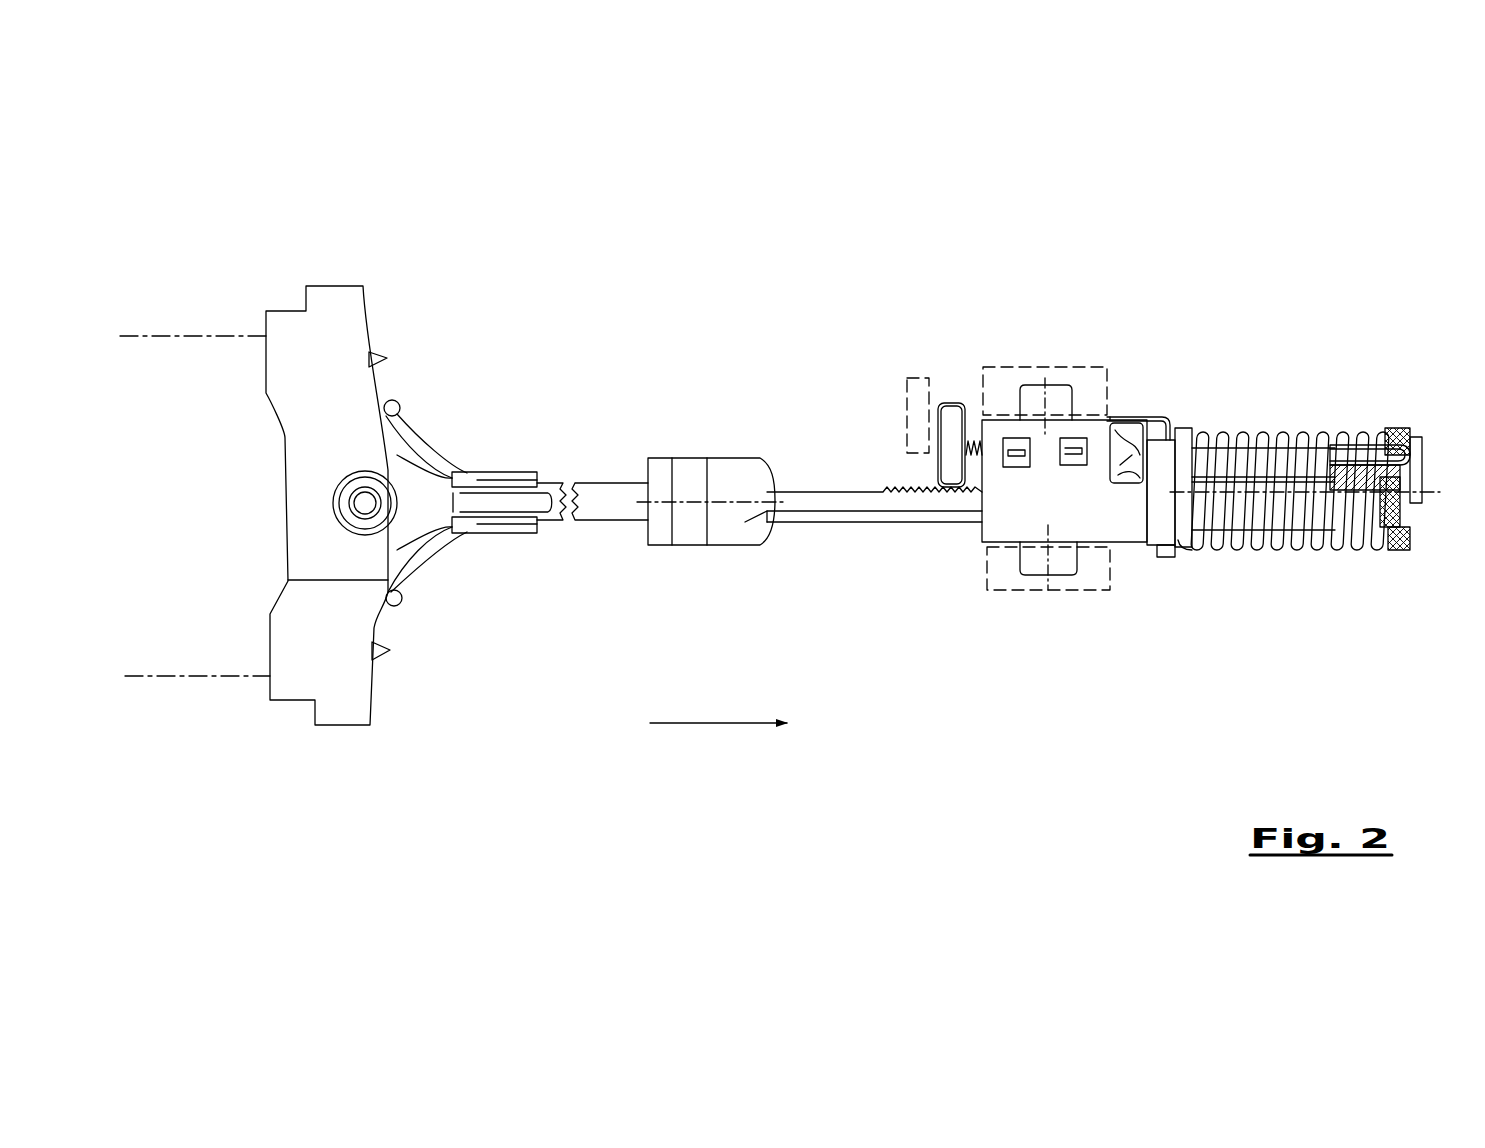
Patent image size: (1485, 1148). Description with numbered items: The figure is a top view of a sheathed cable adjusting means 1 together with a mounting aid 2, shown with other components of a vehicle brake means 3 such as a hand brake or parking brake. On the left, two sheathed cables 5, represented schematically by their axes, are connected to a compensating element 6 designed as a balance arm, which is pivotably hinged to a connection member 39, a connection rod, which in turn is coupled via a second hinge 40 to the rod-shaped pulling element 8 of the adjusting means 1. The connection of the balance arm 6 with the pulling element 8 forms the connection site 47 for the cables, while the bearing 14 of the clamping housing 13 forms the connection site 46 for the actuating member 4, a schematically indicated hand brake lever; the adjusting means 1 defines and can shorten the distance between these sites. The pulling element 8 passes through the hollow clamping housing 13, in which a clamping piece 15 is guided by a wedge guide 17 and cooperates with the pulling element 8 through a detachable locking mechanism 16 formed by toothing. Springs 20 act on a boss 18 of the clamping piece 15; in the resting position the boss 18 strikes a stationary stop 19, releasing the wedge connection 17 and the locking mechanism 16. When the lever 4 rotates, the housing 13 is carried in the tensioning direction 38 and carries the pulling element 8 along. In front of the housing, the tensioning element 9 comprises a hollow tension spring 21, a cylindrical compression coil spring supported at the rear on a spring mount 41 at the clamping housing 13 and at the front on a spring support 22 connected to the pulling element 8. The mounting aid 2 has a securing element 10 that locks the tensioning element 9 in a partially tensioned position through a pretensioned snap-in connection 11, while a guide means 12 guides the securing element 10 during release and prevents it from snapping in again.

The sheathed cable adjusting means 1 is at (905, 325).
The mounting aid 2 is at (1387, 405).
The brake means 3 is at (348, 262).
The actuating member 4 is at (1073, 365).
The sheathed cables 5 is at (182, 334).
The compensating element 6 is at (372, 320).
The pulling element 8 is at (862, 503).
The tensioning element 9 is at (1307, 557).
The securing element 10 is at (1163, 417).
The snap-in connection 11 is at (1412, 430).
The guide means 12 is at (1347, 437).
The clamping housing 13 is at (999, 518).
The bearing 14 is at (1038, 398).
The clamping piece 15 is at (1133, 443).
The locking mechanism 16 is at (933, 488).
The wedge guide 17 is at (1126, 460).
The boss 18 is at (952, 417).
The stop 19 is at (907, 390).
The springs 20 is at (970, 443).
The tension spring 21 is at (1250, 548).
The spring support 22 is at (1393, 557).
The tensioning direction 38 is at (738, 725).
The connection member 39 is at (612, 497).
The second hinge 40 is at (686, 475).
The spring mount 41 is at (1162, 527).
The connection site 46 is at (1008, 598).
The connection site 47 is at (255, 612).